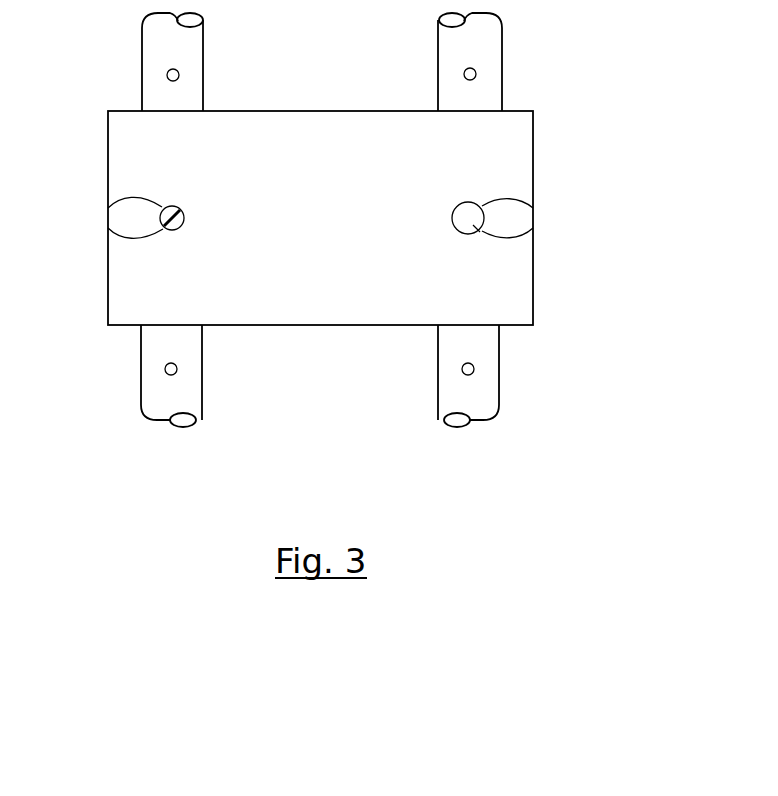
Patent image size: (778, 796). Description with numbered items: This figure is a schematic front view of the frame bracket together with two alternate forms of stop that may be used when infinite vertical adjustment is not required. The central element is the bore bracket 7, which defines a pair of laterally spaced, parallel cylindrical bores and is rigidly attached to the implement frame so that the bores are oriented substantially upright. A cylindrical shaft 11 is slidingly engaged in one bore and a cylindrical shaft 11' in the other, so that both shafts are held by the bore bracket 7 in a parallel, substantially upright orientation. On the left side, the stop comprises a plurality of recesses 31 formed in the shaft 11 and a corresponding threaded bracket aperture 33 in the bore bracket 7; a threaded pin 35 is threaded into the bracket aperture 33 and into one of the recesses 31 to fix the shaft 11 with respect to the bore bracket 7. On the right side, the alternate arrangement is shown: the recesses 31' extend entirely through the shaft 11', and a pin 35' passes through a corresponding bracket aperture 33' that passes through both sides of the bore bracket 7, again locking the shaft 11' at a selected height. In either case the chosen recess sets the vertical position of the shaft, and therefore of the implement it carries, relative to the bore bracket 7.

The bore bracket 7 is at (533, 157).
The cylindrical shaft 11 is at (194, 403).
The cylindrical shaft 11' is at (444, 404).
The recess 31 is at (103, 382).
The recess 31' is at (538, 383).
The threaded bracket aperture 33 is at (101, 211).
The bracket aperture 33' is at (544, 212).
The threaded pin 35 is at (116, 236).
The pin 35' is at (524, 234).